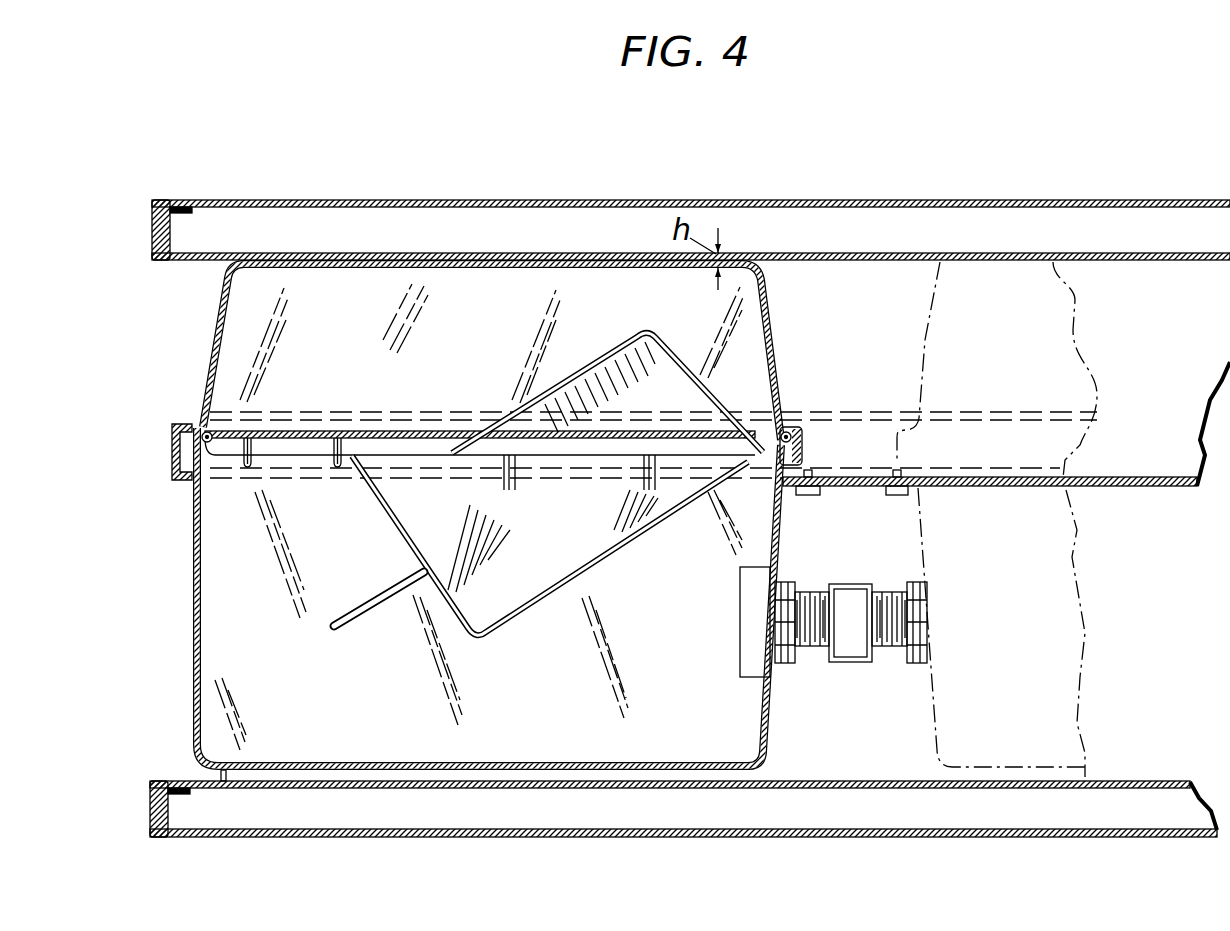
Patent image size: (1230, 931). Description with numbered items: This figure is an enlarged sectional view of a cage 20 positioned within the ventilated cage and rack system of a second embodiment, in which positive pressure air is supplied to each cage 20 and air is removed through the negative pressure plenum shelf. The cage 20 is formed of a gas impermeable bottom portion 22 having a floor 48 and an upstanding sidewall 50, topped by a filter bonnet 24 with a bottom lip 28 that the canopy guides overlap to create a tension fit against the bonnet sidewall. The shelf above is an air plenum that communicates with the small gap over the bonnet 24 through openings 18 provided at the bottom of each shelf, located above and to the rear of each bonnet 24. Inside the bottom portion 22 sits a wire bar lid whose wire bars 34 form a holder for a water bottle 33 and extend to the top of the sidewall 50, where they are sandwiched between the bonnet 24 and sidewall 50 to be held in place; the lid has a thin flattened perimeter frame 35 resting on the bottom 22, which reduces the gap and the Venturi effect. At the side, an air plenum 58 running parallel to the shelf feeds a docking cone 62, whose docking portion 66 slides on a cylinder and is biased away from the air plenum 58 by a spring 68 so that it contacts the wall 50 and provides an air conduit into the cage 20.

The openings 18 is at (851, 260).
The cage 20 is at (178, 656).
The bottom portion 22 is at (200, 741).
The filter bonnet 24 is at (777, 350).
The lip 28 is at (178, 452).
The water bottle 33 is at (672, 316).
The wire bars 34 is at (606, 558).
The flattened perimeter frame 35 is at (208, 437).
The floor 48 is at (661, 766).
The sidewall 50 is at (196, 540).
The air plenum 58 is at (868, 565).
The docking cone 62 is at (807, 582).
The docking portion 66 is at (782, 657).
The spring 68 is at (890, 600).